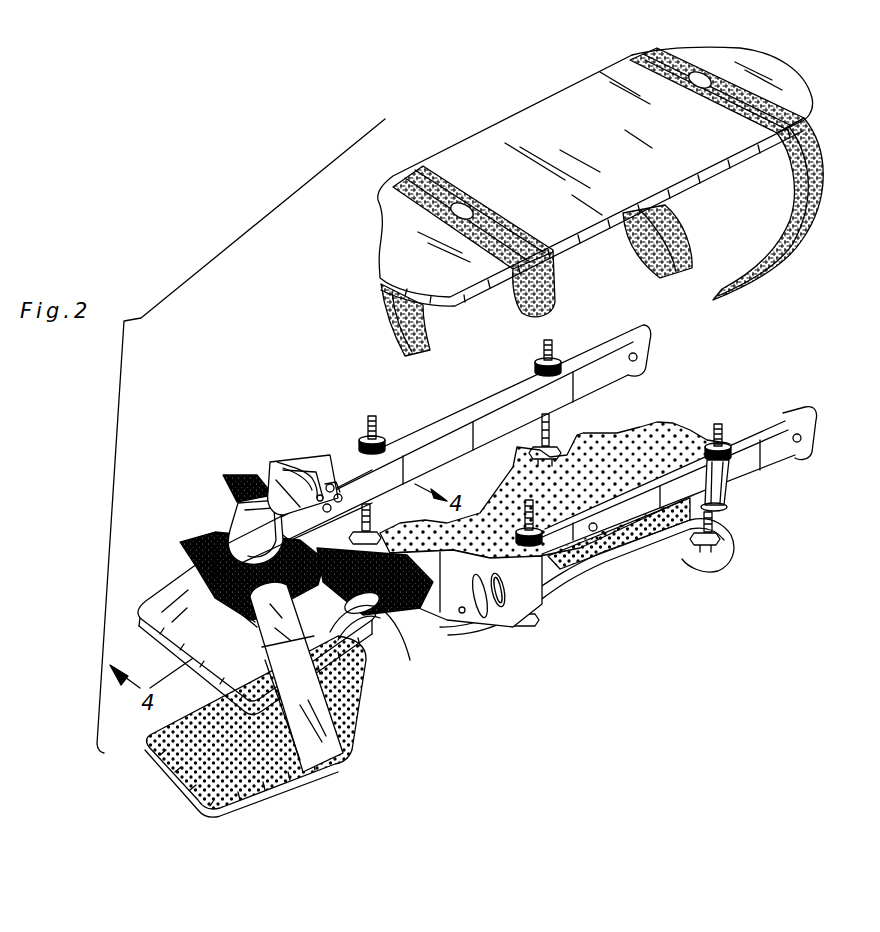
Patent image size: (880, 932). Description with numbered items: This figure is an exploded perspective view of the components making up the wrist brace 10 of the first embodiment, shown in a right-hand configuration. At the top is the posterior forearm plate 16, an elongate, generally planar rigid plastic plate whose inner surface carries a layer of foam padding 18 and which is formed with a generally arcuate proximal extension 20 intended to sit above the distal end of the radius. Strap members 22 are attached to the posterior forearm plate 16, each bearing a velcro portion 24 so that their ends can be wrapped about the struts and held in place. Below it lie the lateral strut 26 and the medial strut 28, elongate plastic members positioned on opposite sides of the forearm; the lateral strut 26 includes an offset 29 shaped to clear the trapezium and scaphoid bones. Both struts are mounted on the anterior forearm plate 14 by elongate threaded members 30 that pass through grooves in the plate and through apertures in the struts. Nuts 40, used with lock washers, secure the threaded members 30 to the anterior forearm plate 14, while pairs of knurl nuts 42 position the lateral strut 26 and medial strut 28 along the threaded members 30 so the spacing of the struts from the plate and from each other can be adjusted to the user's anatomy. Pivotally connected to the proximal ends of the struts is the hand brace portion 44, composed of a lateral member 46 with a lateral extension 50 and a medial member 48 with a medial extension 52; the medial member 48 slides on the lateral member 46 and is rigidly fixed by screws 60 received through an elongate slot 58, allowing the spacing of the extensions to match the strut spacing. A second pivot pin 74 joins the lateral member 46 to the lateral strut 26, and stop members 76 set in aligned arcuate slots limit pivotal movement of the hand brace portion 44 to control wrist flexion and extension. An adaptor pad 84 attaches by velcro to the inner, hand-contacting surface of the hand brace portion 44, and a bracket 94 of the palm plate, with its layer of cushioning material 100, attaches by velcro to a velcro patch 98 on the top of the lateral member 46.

The wrist brace 10 is at (296, 348).
The anterior forearm plate 14 is at (688, 552).
The posterior forearm plate 16 is at (753, 62).
The foam padding 18 is at (450, 309).
The arcuate proximal extension 20 is at (387, 259).
The strap members 22 is at (443, 186).
The velcro portion 24 is at (757, 283).
The lateral strut 26 is at (777, 453).
The medial strut 28 is at (648, 348).
The offset 29 is at (572, 577).
The elongate threaded members 30 is at (372, 434).
The nuts 40 is at (756, 553).
The knurl nuts 42 is at (385, 437).
The hand brace portion 44 is at (185, 549).
The lateral member 46 is at (358, 636).
The medial member 48 is at (232, 546).
The lateral extension 50 is at (423, 608).
The medial extension 52 is at (288, 482).
The elongate slot 58 is at (284, 492).
The screws 60 is at (351, 492).
The second pivot pin 74 is at (465, 613).
The stop members 76 is at (490, 612).
The adaptor pad 84 is at (168, 600).
The bracket 94 is at (325, 749).
The velcro patch 98 is at (232, 598).
The cushioning material 100 is at (258, 777).